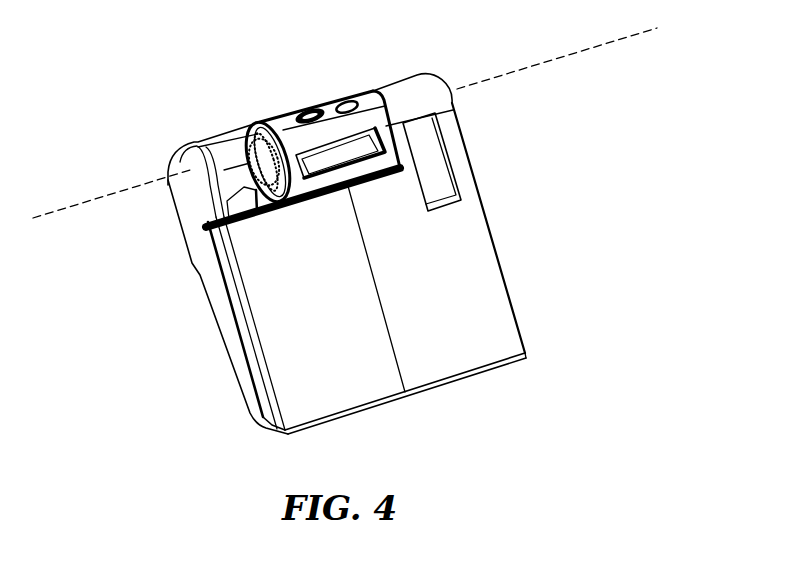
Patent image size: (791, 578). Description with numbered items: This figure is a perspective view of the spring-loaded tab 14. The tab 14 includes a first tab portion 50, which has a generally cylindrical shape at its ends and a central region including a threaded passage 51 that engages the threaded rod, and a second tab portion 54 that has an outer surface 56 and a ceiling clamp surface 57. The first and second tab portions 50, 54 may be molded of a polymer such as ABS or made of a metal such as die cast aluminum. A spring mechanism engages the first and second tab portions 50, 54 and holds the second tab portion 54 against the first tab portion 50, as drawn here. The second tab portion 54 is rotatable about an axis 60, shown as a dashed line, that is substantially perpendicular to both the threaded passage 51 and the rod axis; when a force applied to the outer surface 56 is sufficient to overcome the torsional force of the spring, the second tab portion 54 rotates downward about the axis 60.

The spring-loaded tab 14 is at (560, 173).
The first tab portion 50 is at (318, 108).
The threaded passage 51 is at (302, 103).
The second tab portion 54 is at (506, 281).
The outer surface 56 is at (490, 337).
The ceiling clamp surface 57 is at (268, 427).
The axis 60 is at (52, 217).